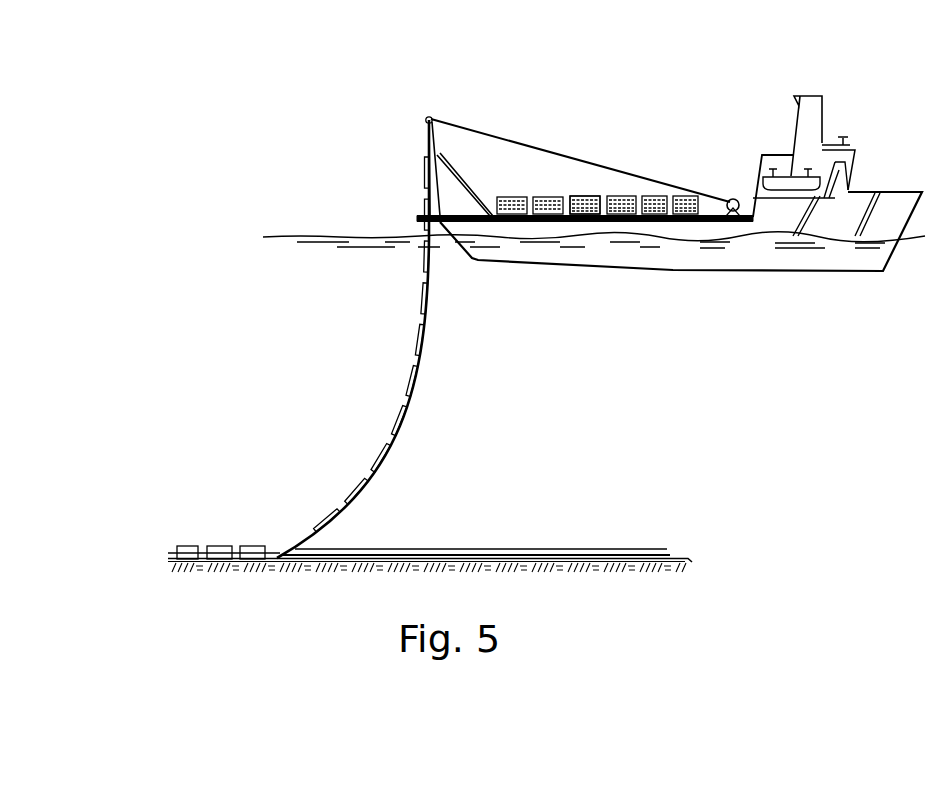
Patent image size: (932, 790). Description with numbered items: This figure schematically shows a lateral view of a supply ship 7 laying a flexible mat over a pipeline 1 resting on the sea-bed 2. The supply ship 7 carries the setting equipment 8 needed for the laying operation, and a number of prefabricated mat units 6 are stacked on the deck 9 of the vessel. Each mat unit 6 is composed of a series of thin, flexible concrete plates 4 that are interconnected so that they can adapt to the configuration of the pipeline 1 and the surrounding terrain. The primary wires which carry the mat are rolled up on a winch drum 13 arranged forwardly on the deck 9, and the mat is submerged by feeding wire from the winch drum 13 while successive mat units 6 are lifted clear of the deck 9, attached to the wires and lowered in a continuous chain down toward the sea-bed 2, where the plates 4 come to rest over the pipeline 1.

The pipeline 1 is at (512, 552).
The sea-bed 2 is at (615, 558).
The plates 4 is at (617, 214).
The mat units 6 is at (585, 196).
The supply ship 7 is at (787, 263).
The setting equipment 8 is at (423, 142).
The deck 9 is at (685, 216).
The winch drum 13 is at (737, 198).